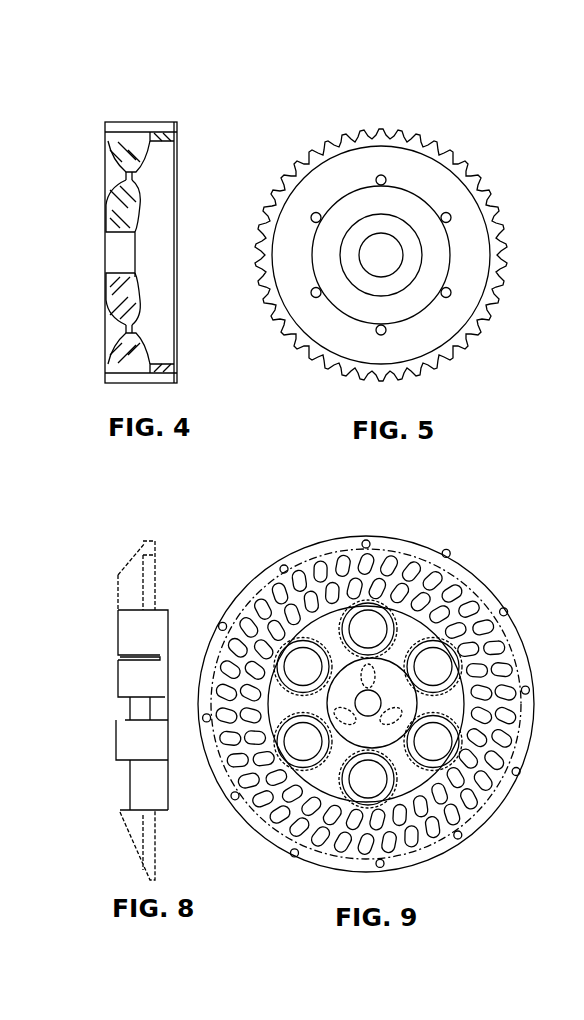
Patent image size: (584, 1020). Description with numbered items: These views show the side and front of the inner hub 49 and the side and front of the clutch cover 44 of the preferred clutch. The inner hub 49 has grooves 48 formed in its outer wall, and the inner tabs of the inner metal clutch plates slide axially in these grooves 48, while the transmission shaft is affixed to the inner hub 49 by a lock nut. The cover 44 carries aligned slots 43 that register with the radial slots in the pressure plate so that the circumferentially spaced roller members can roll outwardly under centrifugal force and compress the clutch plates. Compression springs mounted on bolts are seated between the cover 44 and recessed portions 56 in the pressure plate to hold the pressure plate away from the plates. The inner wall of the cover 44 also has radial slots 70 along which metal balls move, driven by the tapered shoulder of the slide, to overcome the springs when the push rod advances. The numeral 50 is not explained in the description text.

In FIG. 9, the aligned slots 43 is at (458, 592).
In FIG. 8, the cover 44 is at (118, 610).
In FIG. 9, the cover 44 is at (332, 532).
In FIG. 4, the grooves 48 is at (140, 122).
In FIG. 5, the grooves 48 is at (358, 130).
In FIG. 4, the inner hub 49 is at (125, 155).
In FIG. 5, the inner hub 49 is at (320, 190).
In FIG. 5, the drive assembly 50 is at (583, 80).
In FIG. 8, the recessed portions 56 is at (163, 657).
In FIG. 9, the radial slots 70 is at (368, 667).